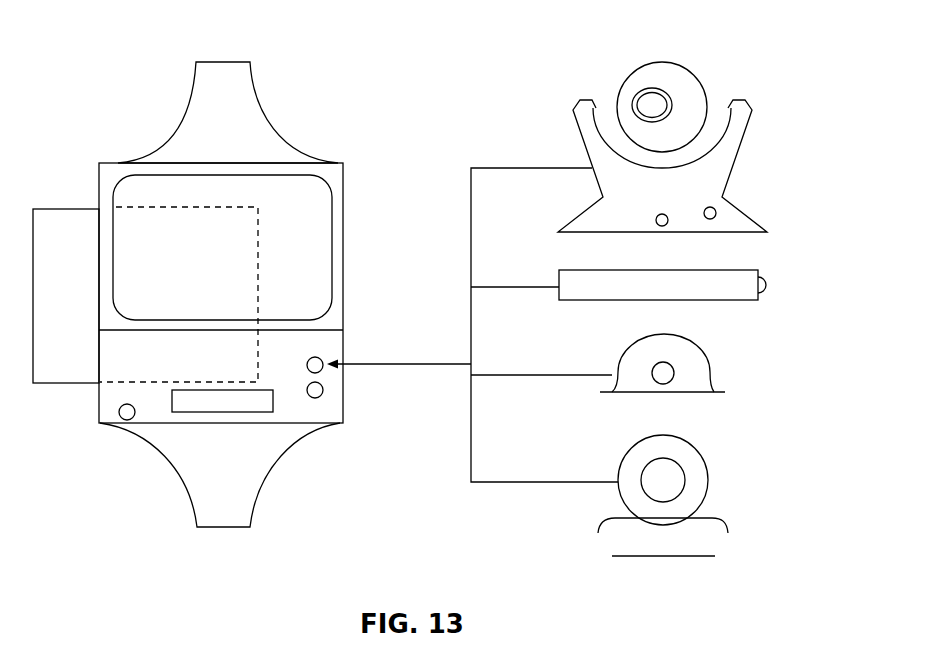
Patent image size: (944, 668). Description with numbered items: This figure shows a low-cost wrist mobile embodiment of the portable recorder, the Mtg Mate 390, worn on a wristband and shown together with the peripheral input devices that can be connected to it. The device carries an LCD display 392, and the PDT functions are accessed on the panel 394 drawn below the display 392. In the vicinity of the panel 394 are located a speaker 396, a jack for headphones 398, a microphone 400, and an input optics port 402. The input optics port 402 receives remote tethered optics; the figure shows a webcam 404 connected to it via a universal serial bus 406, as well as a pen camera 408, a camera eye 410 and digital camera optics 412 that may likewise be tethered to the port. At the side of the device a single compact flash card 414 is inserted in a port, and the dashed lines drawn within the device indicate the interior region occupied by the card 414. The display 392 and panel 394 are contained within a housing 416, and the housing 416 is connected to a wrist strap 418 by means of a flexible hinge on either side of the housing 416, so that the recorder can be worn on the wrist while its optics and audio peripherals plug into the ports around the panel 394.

The low-cost wrist mobile Mtg Mate 390 is at (350, 107).
The LCD display 392 is at (332, 245).
The panel 394 is at (306, 409).
The speaker 396 is at (225, 389).
The jack for headphones 398 is at (119, 414).
The microphone 400 is at (323, 393).
The input optics port 402 is at (322, 359).
The webcam 404 is at (663, 63).
The universal serial bus (USB) 406 is at (539, 168).
The pen camera 408 is at (768, 283).
The camera eye 410 is at (667, 337).
The digital camera optics 412 is at (660, 438).
The compact flash card 414 is at (36, 307).
The housing 416 is at (343, 288).
The wrist strap 418 is at (246, 124).